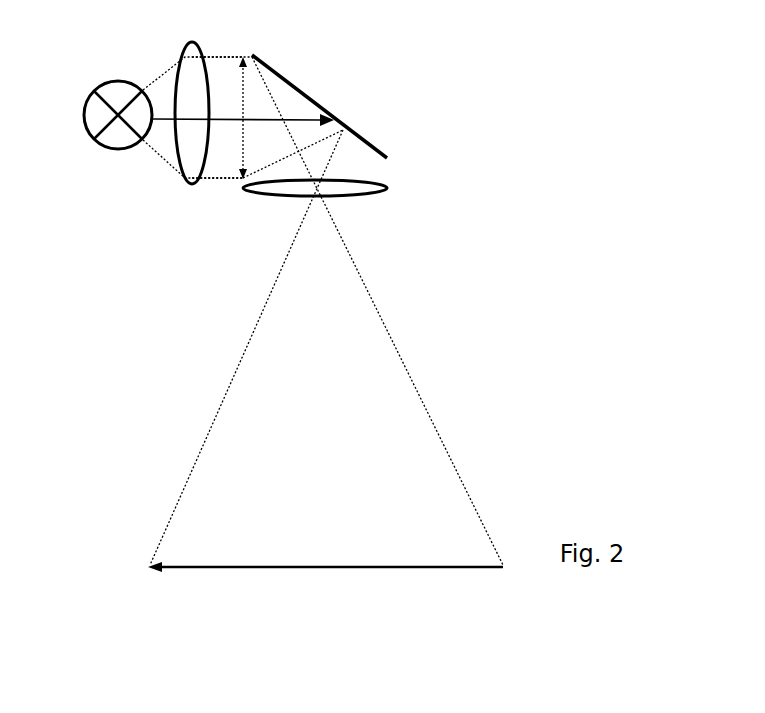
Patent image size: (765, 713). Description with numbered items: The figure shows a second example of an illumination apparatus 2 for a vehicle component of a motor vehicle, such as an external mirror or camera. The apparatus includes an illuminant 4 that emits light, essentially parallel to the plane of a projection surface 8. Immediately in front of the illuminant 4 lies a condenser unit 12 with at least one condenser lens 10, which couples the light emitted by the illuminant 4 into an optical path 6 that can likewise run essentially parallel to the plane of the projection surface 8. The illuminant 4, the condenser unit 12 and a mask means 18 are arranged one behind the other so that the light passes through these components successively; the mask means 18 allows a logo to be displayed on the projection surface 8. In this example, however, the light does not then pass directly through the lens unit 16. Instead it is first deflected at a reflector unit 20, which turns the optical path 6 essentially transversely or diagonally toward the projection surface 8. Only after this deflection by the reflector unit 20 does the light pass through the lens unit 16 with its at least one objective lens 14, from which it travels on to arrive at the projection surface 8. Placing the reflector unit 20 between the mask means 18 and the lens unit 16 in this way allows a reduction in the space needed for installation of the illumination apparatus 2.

The illumination apparatus 2 is at (73, 83).
The illuminant 4 is at (87, 120).
The optical path 6 is at (165, 118).
The projection surface 8 is at (420, 603).
The condenser lens 10 is at (200, 48).
The condenser unit 12 is at (176, 196).
The objective lens 14 is at (385, 187).
The lens unit 16 is at (394, 212).
The mask means 18 is at (242, 140).
The reflector unit 20 is at (310, 98).